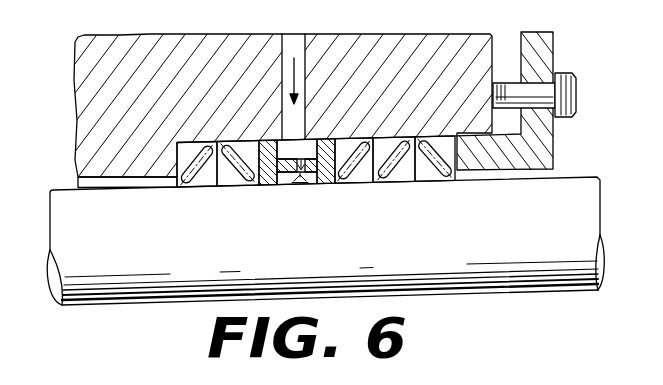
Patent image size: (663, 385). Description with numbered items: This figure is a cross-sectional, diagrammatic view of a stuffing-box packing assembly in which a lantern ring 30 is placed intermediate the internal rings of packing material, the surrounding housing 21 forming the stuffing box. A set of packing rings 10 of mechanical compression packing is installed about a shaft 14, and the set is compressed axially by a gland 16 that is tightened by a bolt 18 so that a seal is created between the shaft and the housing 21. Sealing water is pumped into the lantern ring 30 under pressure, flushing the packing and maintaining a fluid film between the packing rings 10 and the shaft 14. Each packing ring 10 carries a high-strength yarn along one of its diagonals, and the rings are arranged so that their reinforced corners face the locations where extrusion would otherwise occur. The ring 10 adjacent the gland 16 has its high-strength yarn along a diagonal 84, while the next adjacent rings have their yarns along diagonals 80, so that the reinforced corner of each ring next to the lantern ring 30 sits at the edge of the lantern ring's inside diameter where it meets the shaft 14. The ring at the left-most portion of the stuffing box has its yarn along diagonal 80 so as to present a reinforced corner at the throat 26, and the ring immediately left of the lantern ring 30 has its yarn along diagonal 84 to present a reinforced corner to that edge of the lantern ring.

The packing ring 10 is at (319, 170).
The shaft 14 is at (276, 248).
The gland 16 is at (553, 50).
The bolt 18 is at (573, 92).
The housing 21 is at (90, 84).
The throat 26 is at (117, 190).
The lantern ring 30 is at (323, 139).
The diagonal 80 is at (177, 188).
The diagonal 84 is at (283, 214).